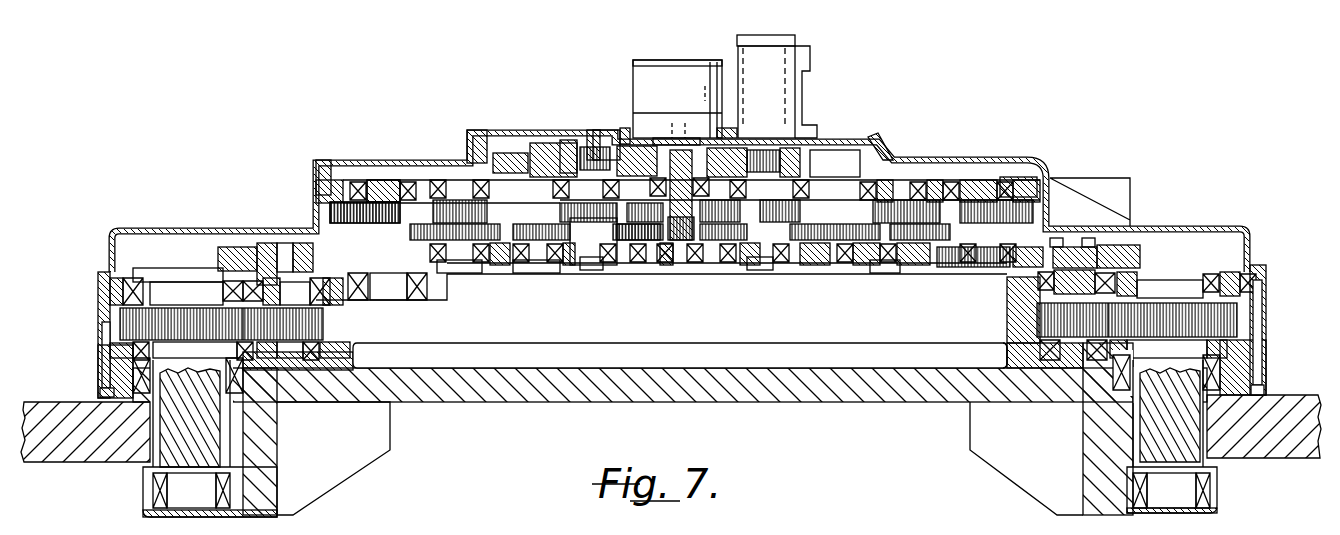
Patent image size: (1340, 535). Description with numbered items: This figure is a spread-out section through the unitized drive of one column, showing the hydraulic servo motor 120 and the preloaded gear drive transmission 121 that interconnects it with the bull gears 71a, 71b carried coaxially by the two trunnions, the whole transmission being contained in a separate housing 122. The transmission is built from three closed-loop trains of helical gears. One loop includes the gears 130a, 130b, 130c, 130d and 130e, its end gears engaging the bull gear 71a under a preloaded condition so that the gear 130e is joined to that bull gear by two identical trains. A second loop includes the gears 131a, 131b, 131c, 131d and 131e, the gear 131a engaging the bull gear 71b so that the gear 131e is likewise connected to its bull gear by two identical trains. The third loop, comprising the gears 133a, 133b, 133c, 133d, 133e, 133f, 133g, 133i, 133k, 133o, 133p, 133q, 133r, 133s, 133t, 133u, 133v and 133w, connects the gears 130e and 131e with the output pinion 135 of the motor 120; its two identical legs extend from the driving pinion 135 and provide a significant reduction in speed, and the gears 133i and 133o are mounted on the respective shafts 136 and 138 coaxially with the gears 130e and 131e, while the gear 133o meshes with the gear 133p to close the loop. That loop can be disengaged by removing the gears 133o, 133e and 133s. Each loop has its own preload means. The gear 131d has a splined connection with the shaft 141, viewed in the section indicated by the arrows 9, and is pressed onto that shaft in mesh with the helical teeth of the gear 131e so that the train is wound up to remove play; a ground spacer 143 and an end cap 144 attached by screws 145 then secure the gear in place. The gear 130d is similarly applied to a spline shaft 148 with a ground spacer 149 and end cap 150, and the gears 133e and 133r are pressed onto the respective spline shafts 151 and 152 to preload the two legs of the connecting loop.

The hydraulic servo motor 120 is at (798, 70).
The preloaded gear drive transmission 121 is at (559, 414).
The transmission housing 122 is at (507, 400).
The bull gear 71a is at (1283, 460).
The bull gear 71b is at (60, 407).
The gear 130a is at (1140, 440).
The gear 130b is at (1165, 310).
The gear 130c is at (1020, 345).
The gear 130d is at (1127, 250).
The gear 130e is at (987, 268).
The gear 131a is at (240, 438).
The gear 131b is at (120, 322).
The gear 131c is at (355, 345).
The gear 131d is at (236, 247).
The gear 131e is at (425, 300).
The gear 133a is at (640, 264).
The gear 133b is at (625, 262).
The gear 133c is at (600, 264).
The gear 133d is at (597, 172).
The gear 133e is at (548, 160).
The gear 133f is at (548, 273).
The gear 133g is at (900, 242).
The gear 133i is at (398, 205).
The gear 133k is at (460, 198).
The gear 133o is at (1028, 172).
The gear 133p is at (980, 195).
The gear 133q is at (478, 273).
The gear 133r is at (820, 242).
The gear 133s is at (893, 212).
The gear 133t is at (766, 172).
The gear 133u is at (778, 264).
The gear 133v is at (712, 242).
The gear 133w is at (725, 264).
The output pinion 135 is at (682, 242).
The shaft 136 is at (378, 180).
The shaft 138 is at (990, 178).
The shaft 141 is at (288, 262).
The spacer 143 is at (318, 305).
The end cap 144 is at (260, 247).
The screws 145 is at (230, 222).
The spline shaft 148 is at (1090, 238).
The spacer 149 is at (1050, 290).
The end cap 150 is at (1060, 238).
The spline shaft 151 is at (600, 150).
The spline shaft 152 is at (875, 150).
The section line 9 is at (214, 258).